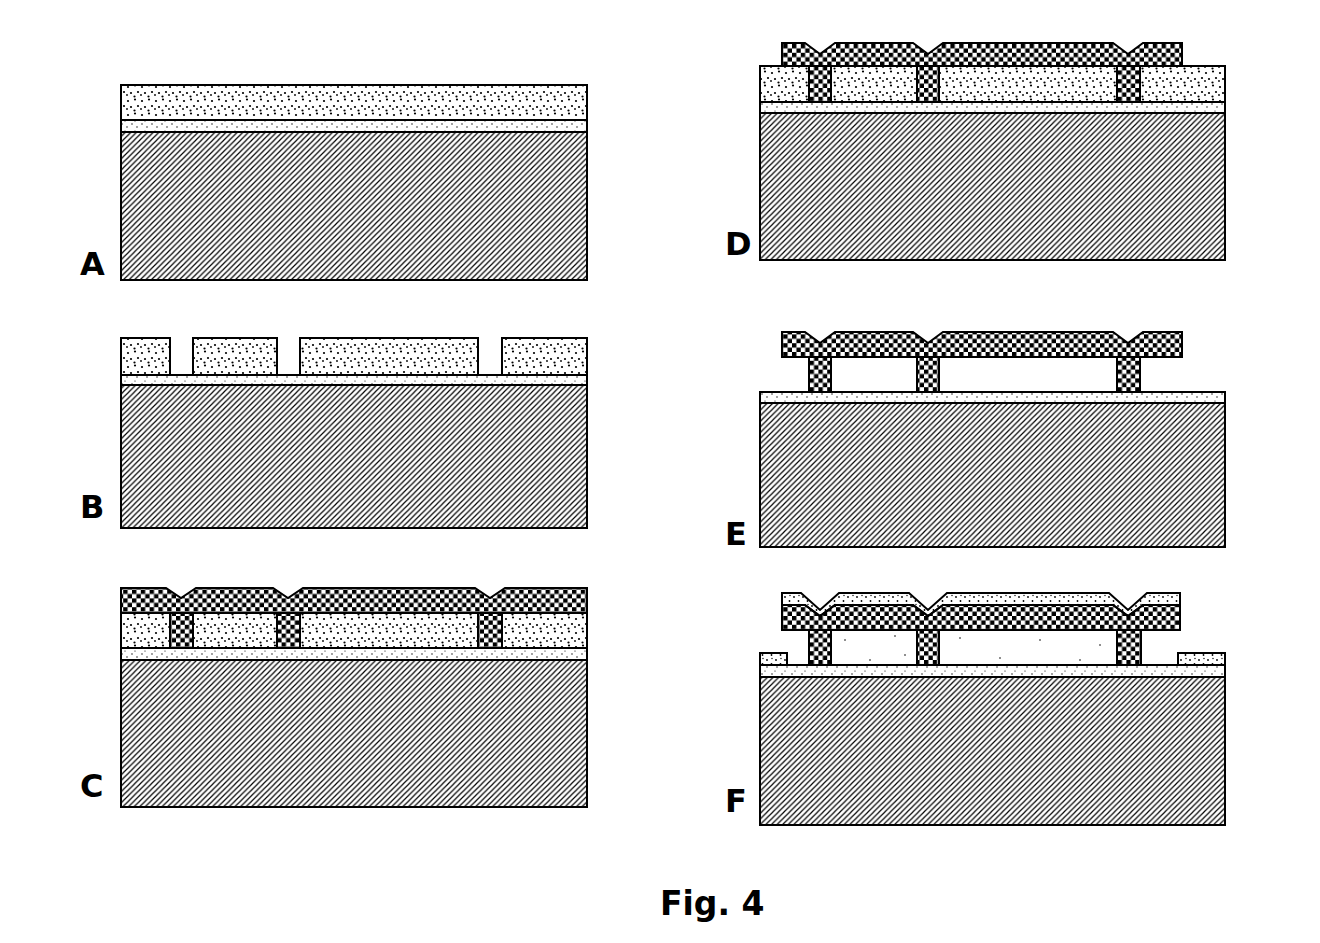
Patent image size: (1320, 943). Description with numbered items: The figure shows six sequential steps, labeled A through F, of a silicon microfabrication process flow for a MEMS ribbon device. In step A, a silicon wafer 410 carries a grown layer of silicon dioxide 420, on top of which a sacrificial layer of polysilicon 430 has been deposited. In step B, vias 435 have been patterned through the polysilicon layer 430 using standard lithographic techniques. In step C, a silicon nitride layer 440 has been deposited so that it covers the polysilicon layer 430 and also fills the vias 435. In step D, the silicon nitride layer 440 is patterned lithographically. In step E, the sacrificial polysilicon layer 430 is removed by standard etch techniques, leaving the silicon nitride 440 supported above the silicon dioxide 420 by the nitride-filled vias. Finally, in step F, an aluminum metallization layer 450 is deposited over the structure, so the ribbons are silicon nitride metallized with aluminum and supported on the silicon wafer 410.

The silicon wafer 410 is at (580, 265).
The layer of silicon dioxide 420 is at (587, 123).
The sacrificial layer of polysilicon 430 is at (587, 100).
The vias 435 is at (182, 346).
The silicon nitride layer 440 is at (587, 597).
The aluminum metallization layer 450 is at (1180, 598).